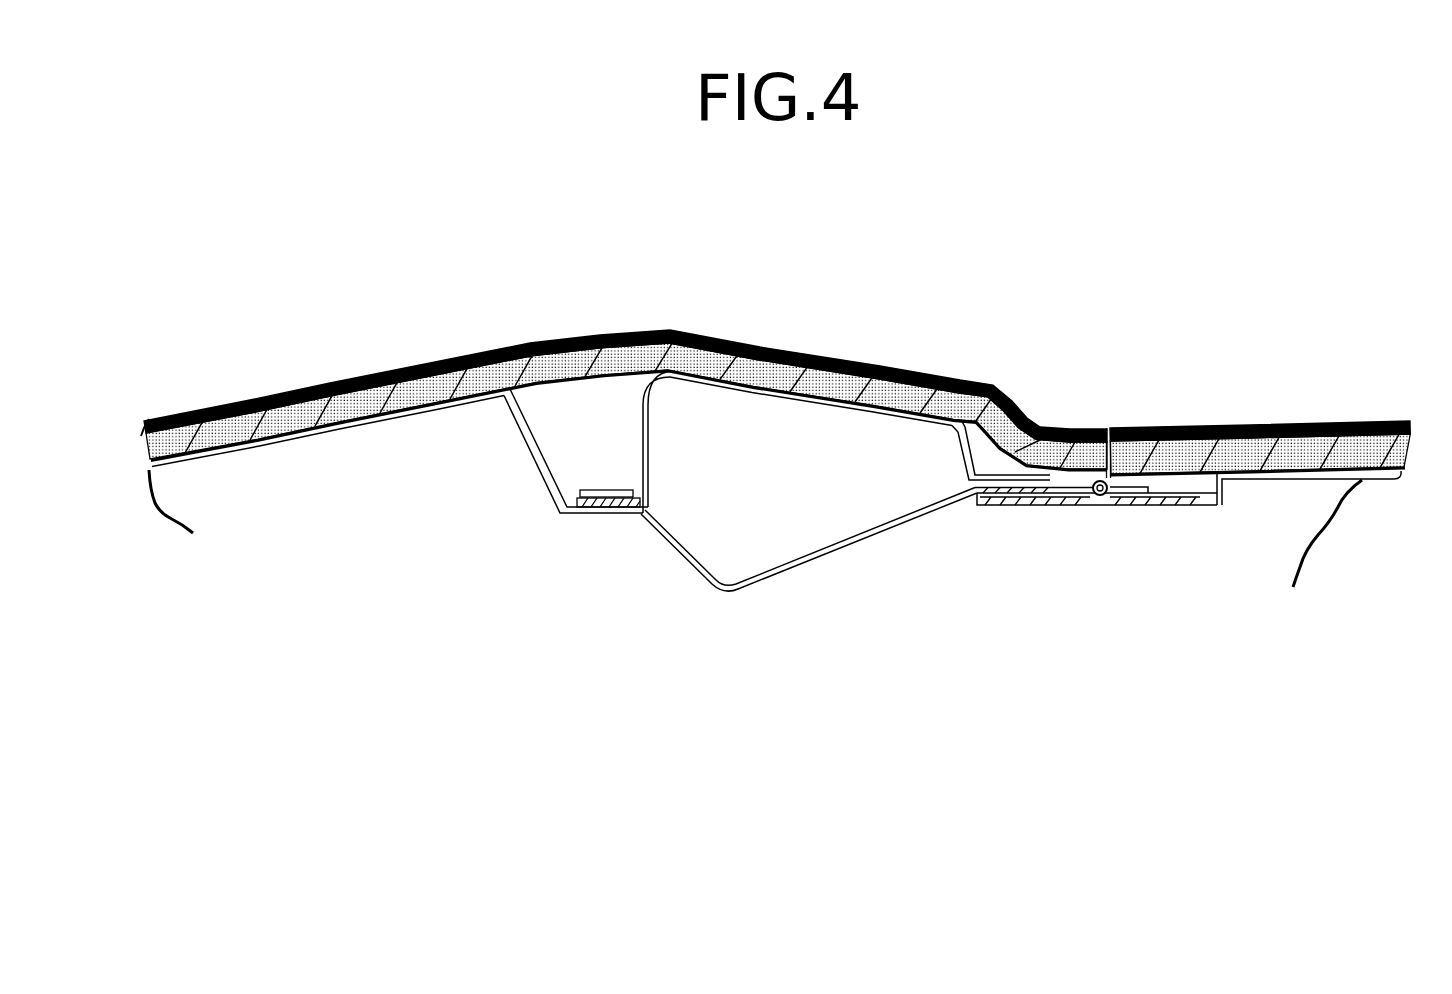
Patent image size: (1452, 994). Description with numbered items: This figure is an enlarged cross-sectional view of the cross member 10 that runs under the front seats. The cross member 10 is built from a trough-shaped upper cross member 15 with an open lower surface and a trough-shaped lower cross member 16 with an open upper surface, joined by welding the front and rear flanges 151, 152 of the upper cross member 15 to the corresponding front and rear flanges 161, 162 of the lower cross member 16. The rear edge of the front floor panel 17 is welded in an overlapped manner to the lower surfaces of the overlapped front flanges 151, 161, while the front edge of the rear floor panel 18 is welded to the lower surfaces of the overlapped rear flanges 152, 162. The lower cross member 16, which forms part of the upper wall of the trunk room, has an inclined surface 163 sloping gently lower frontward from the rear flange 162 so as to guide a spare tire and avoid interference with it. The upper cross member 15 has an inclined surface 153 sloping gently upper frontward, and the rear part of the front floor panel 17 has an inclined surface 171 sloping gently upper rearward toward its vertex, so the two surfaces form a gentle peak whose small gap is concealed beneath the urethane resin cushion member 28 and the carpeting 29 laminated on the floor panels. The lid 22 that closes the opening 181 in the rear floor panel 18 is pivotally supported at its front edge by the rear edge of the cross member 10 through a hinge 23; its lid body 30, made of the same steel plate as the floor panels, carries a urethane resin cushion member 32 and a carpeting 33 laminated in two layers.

The cross member 10 is at (767, 606).
The upper cross member 15 is at (808, 418).
The flange 151 is at (605, 492).
The flange 152 is at (1012, 420).
The inclined surface 153 is at (904, 423).
The lower cross member 16 is at (718, 604).
The flange 161 is at (590, 510).
The flange 162 is at (1018, 493).
The inclined surface 163 is at (837, 550).
The front floor panel 17 is at (301, 470).
The inclined surface 171 is at (367, 427).
The rear floor panel 18 is at (1060, 521).
The opening 181 is at (1099, 498).
The lid 22 is at (1266, 385).
The hinge 23 is at (1112, 478).
The urethane resin cushion member 28 is at (570, 367).
The carpeting 29 is at (715, 335).
The lid body 30 is at (1207, 504).
The urethane resin cushion member 32 is at (1238, 458).
The carpeting 33 is at (1380, 422).